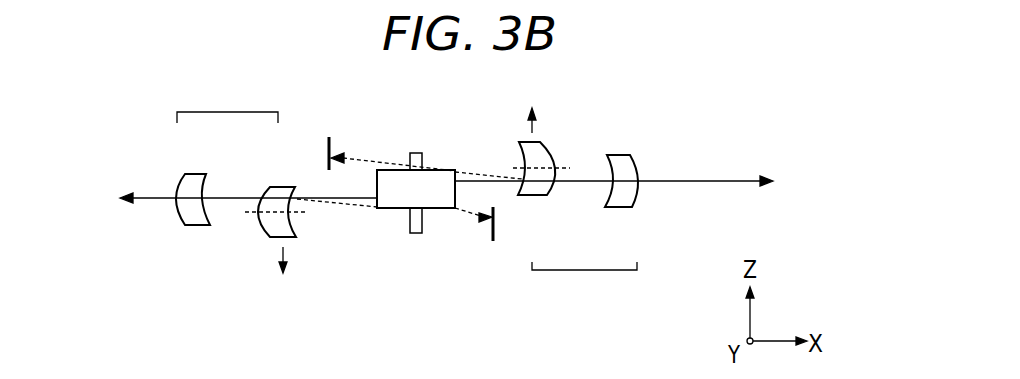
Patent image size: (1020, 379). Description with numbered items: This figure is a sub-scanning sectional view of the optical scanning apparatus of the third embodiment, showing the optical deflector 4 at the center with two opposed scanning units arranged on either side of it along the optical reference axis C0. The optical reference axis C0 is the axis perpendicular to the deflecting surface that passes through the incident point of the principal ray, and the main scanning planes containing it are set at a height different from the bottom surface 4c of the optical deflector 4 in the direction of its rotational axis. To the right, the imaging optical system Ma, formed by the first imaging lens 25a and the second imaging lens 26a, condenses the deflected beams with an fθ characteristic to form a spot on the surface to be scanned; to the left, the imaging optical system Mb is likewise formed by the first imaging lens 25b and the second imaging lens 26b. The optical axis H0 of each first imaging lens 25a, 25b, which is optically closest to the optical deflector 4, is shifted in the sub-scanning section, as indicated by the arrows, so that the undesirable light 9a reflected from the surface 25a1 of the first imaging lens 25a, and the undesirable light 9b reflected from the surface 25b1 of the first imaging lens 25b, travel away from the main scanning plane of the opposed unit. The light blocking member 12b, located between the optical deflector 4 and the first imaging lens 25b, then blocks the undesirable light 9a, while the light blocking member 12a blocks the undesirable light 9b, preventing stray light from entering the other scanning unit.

The optical reference axis C0 is at (148, 199).
The imaging optical system Mb is at (227, 103).
The second imaging lens 26b is at (205, 174).
The first imaging lens 25b is at (283, 187).
The surface of the first imaging lens 25b1 is at (296, 233).
The optical axis of the first imaging lens H0 is at (302, 213).
The light blocking member 12b is at (328, 137).
The optical deflector 4 is at (397, 170).
The bottom surface of the optical deflector 4c is at (435, 209).
The undesirable light 9a is at (472, 175).
The undesirable light 9b is at (355, 204).
The light blocking member 12a is at (493, 242).
The first imaging lens 25a is at (530, 195).
The surface of the first imaging lens 25a1 is at (522, 158).
The second imaging lens 26a is at (612, 207).
The imaging optical system Ma is at (584, 281).